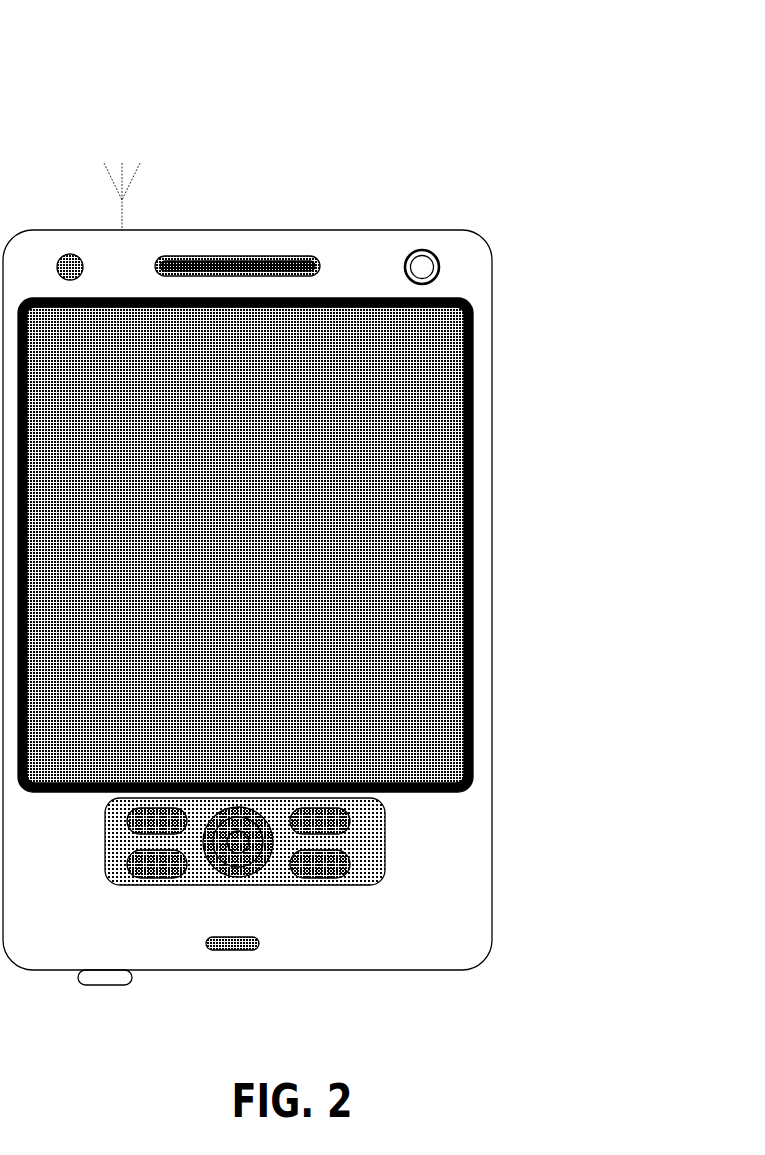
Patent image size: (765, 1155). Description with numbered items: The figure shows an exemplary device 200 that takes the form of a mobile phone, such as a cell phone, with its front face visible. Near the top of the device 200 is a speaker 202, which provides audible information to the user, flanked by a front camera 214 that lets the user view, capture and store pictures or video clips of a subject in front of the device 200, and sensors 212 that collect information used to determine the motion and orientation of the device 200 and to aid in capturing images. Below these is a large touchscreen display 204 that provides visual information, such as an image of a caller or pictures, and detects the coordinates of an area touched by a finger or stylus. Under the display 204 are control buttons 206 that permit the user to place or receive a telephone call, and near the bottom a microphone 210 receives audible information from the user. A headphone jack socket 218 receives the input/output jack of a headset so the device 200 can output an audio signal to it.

The device 200 is at (293, 139).
The speaker 202 is at (243, 256).
The touchscreen display 204 is at (397, 298).
The control buttons 206 is at (385, 842).
The microphone 210 is at (259, 943).
The sensors 212 is at (440, 267).
The front camera 214 is at (70, 254).
The headphone jack socket 218 is at (114, 985).